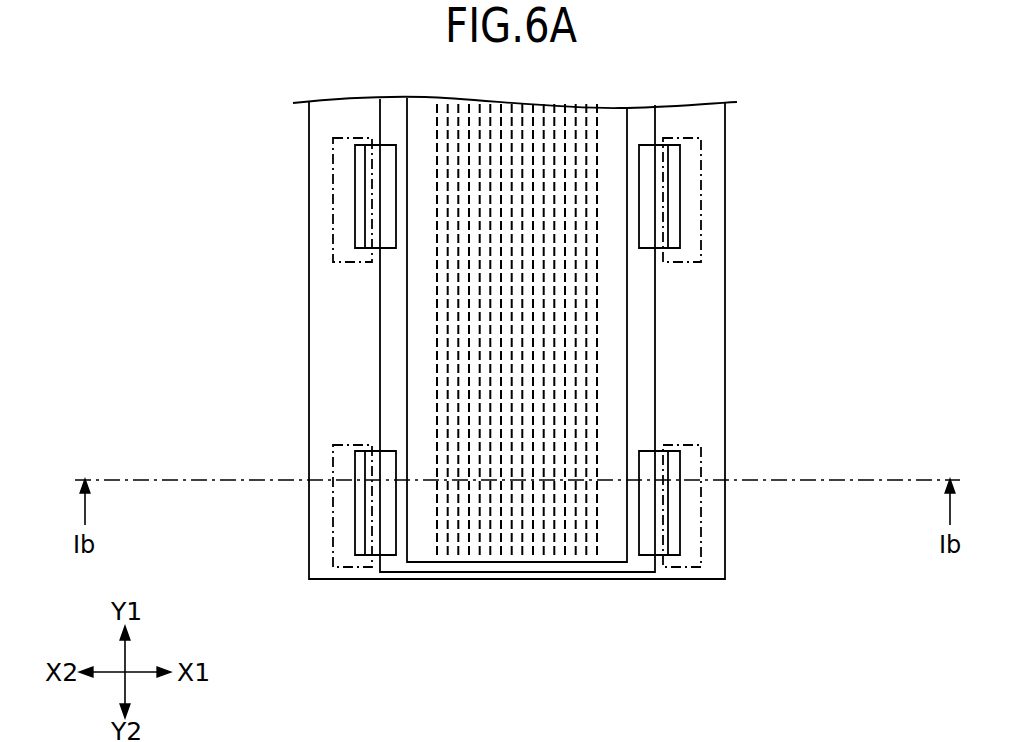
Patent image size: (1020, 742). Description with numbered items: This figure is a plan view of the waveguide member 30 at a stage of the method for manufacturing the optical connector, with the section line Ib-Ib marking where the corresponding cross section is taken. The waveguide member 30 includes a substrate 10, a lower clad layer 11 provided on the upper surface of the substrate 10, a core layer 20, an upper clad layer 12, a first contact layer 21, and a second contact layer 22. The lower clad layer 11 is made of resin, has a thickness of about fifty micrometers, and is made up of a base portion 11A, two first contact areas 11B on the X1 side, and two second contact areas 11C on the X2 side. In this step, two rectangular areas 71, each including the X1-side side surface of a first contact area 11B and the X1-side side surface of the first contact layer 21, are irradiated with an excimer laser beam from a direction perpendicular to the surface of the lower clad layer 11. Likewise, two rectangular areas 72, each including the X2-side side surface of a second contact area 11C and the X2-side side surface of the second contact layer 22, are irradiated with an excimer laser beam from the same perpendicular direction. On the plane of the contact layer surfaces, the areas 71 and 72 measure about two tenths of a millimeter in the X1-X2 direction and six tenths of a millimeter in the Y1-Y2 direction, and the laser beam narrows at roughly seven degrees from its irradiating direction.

The substrate 10 is at (703, 133).
The lower clad layer 11 is at (645, 385).
The base portion 11A is at (645, 348).
The first contact area 11B is at (675, 178).
The second contact area 11C is at (357, 178).
The upper clad layer 12 is at (613, 547).
The core layer 20 is at (463, 543).
The first contact layer 21 is at (648, 228).
The second contact layer 22 is at (387, 228).
The waveguide member 30 is at (511, 592).
The rectangular area 71 is at (692, 237).
The rectangular area 72 is at (343, 237).